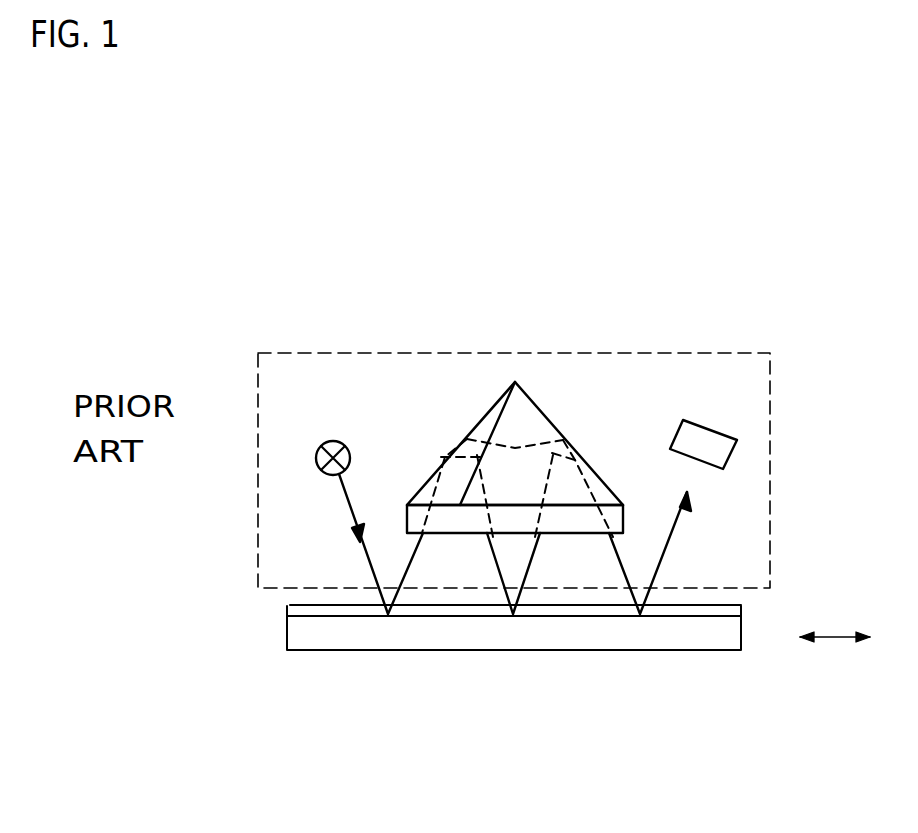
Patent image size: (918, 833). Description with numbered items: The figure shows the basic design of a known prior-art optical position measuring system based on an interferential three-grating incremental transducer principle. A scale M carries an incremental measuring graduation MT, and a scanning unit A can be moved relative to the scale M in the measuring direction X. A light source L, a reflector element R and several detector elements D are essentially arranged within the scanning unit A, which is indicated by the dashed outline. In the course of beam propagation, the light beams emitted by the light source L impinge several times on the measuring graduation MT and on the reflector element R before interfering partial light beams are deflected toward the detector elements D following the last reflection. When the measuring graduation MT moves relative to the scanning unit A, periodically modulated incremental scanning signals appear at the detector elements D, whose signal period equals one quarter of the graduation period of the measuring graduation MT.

The scanning unit A is at (771, 420).
The light source L is at (341, 440).
The reflector element R is at (553, 423).
The detector elements D is at (700, 427).
The incremental measuring graduation MT is at (283, 605).
The scale M is at (709, 637).
The measuring direction X is at (835, 656).